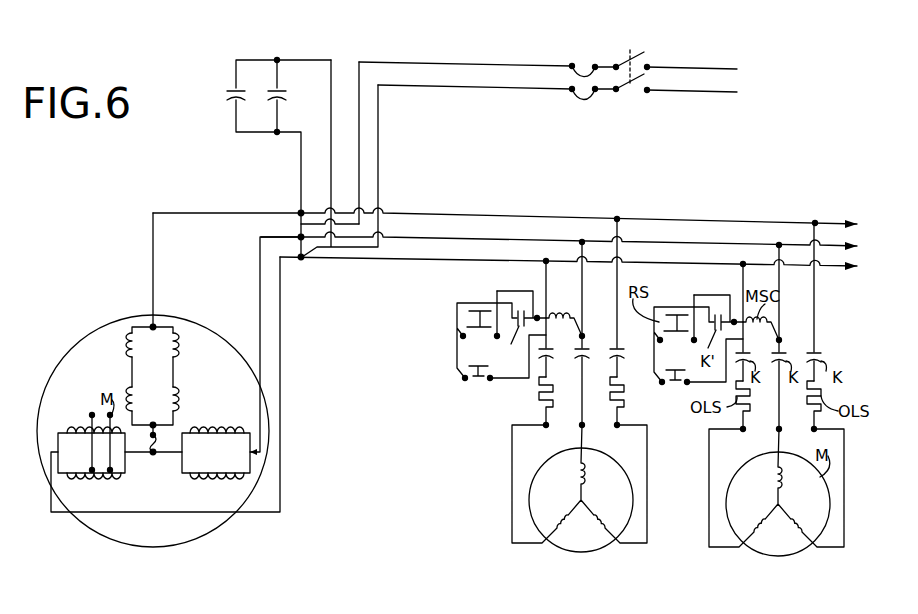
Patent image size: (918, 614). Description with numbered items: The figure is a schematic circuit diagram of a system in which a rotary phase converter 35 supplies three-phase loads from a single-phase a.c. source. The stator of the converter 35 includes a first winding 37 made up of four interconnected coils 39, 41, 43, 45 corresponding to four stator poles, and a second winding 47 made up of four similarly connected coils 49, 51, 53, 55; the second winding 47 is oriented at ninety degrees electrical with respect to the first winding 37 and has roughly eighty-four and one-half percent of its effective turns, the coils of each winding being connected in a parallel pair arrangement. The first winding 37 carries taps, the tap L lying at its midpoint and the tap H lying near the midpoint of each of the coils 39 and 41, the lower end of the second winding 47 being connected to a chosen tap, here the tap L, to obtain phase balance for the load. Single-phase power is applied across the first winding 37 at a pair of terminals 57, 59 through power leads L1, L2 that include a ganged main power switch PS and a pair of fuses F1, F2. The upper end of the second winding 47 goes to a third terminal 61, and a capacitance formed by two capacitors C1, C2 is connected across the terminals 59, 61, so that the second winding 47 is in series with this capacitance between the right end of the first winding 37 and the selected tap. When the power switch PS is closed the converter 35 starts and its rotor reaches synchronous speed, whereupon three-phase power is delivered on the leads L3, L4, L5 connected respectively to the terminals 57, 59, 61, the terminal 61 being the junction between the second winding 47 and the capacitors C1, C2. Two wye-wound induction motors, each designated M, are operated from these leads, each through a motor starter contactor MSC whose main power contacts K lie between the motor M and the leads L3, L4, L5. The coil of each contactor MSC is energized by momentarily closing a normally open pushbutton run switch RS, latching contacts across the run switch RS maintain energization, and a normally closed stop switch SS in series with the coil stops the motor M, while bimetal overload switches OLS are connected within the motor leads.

The rotary converter 35 is at (148, 314).
The first winding 37 is at (162, 499).
The coil 39 is at (80, 478).
The coil 41 is at (70, 432).
The coil 43 is at (237, 478).
The coil 45 is at (240, 432).
The second winding 47 is at (165, 389).
The coil 49 is at (127, 340).
The coil 51 is at (179, 343).
The coil 53 is at (127, 397).
The coil 55 is at (180, 397).
The terminal 57 is at (302, 258).
The terminal 59 is at (300, 236).
The third terminal 61 is at (300, 211).
The capacitor C1 is at (226, 92).
The capacitor C2 is at (267, 92).
The fuse F1 is at (580, 62).
The fuse F2 is at (575, 92).
The main power switch PS is at (629, 62).
The power lead L1 is at (702, 55).
The power lead L2 is at (695, 93).
The power lead L3 is at (433, 260).
The power lead L4 is at (433, 237).
The power lead L5 is at (437, 212).
The run switch RS is at (466, 324).
The stop switch SS is at (478, 380).
The motor starter contactor MSC is at (568, 300).
The main power contacts K is at (553, 357).
The bimetal overload switch OLS is at (539, 386).
The motor M is at (623, 473).
The tap H is at (92, 414).
The tap L is at (157, 439).